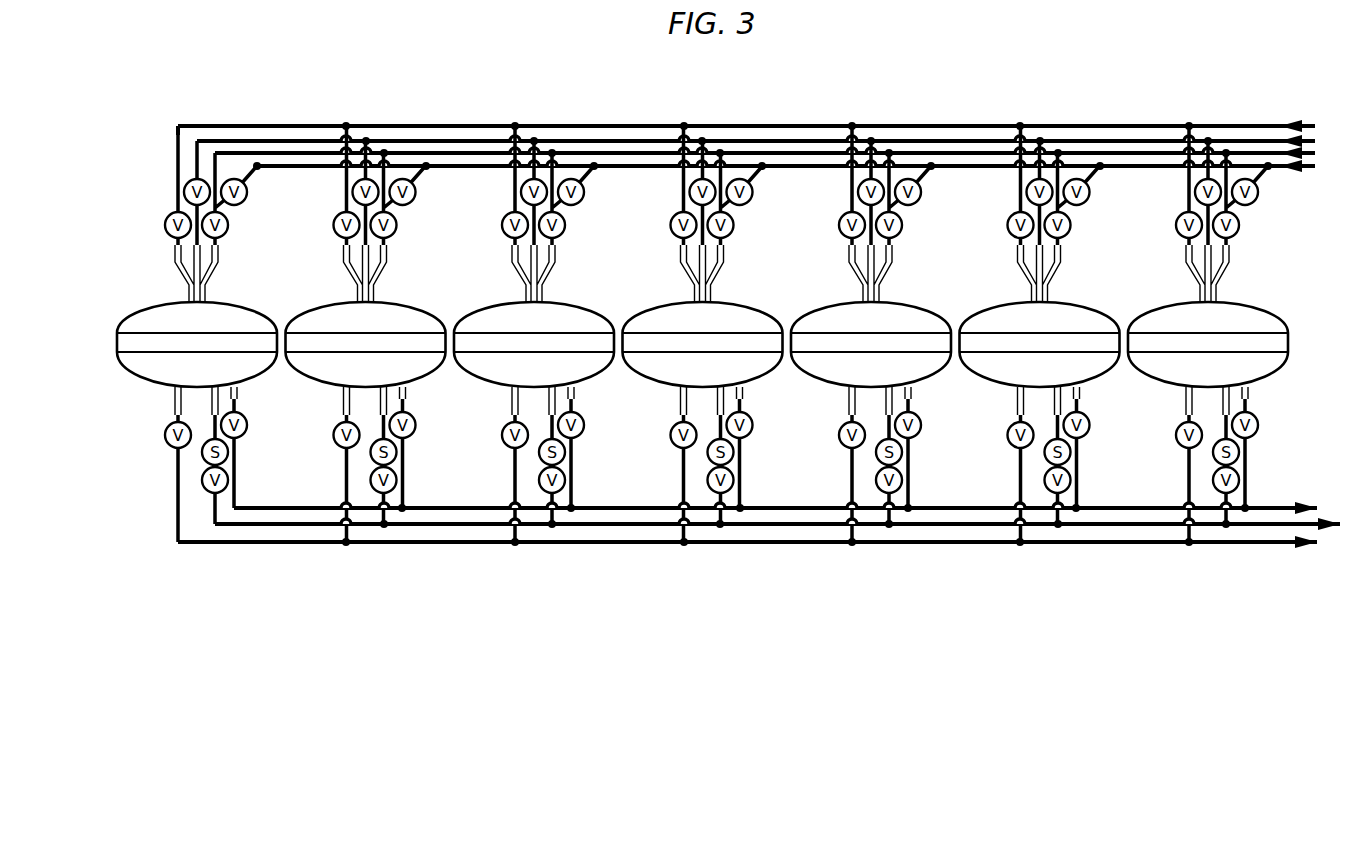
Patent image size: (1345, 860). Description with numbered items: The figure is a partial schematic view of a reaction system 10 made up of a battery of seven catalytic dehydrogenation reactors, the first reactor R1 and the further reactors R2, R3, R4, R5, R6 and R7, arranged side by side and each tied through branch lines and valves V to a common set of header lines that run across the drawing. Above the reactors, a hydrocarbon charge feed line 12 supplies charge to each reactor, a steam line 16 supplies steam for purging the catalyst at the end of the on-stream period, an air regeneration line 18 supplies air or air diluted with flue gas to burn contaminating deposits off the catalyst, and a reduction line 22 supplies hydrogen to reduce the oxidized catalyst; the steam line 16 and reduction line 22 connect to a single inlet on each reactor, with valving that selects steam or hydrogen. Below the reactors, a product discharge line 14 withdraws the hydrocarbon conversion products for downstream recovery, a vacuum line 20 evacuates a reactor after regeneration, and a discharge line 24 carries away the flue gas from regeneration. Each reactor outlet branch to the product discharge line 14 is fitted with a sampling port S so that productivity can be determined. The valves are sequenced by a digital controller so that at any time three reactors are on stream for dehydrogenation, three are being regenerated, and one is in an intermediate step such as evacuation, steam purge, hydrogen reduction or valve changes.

The system 10 is at (136, 84).
The hydrocarbon charge feed line 12 is at (178, 168).
The product discharge line 14 is at (296, 528).
The steam line 16 is at (296, 170).
The air regeneration line 18 is at (457, 144).
The vacuum line 20 is at (1276, 505).
The reduction line 22 is at (789, 157).
The discharge line 24 is at (203, 546).
The catalytic dehydrogenation reactor R1 is at (246, 306).
The reactor R2 is at (414, 306).
The reactor R3 is at (583, 306).
The reactor R4 is at (751, 306).
The reactor R5 is at (920, 306).
The reactor R6 is at (1088, 306).
The reactor R7 is at (1257, 306).